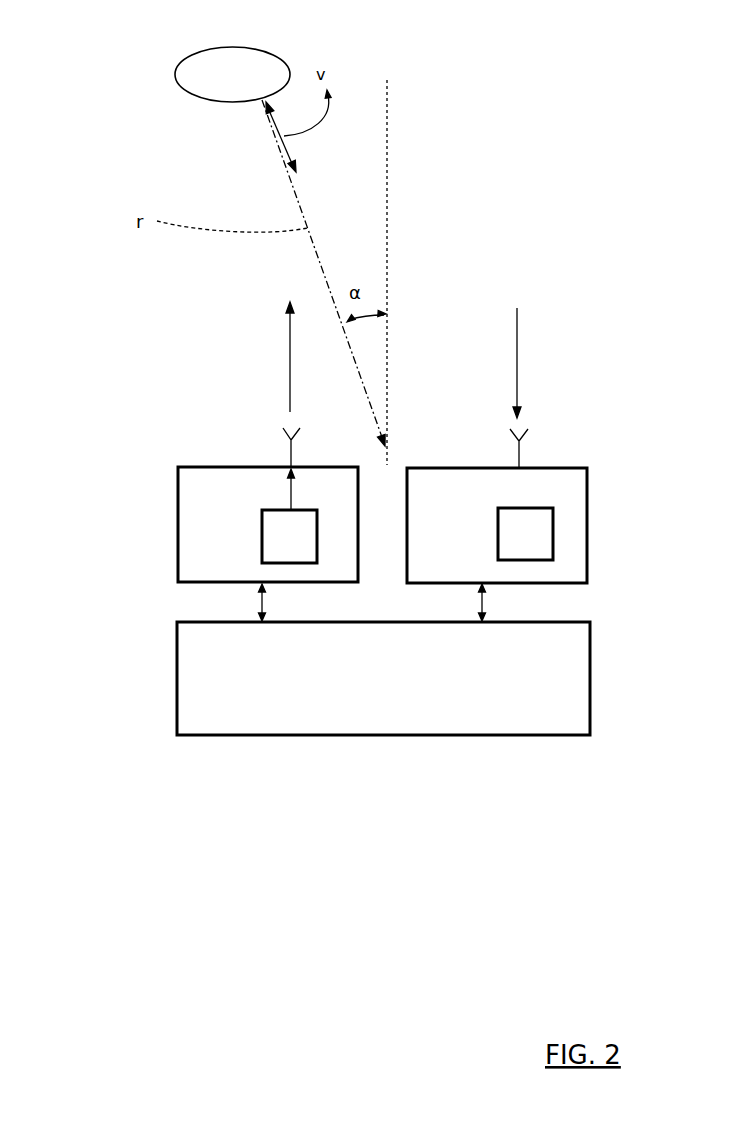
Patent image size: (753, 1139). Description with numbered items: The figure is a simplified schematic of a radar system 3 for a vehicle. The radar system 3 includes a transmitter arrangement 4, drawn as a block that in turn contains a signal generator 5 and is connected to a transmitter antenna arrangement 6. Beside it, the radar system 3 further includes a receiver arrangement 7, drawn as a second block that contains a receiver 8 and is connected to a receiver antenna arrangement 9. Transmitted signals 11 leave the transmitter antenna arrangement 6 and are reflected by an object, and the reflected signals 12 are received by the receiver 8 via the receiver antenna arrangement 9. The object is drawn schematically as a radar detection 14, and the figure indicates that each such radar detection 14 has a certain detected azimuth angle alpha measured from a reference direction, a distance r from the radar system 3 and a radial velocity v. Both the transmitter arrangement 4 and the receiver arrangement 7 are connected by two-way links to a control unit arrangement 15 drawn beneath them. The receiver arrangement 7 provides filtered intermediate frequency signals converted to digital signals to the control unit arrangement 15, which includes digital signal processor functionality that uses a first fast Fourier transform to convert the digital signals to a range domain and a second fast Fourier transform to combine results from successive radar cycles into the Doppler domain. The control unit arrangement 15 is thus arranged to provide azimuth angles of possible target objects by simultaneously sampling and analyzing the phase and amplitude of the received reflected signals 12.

The radar system 3 is at (455, 232).
The transmitter arrangement 4 is at (268, 524).
The signal generator 5 is at (289, 516).
The transmitter antenna arrangement 6 is at (289, 448).
The receiver arrangement 7 is at (497, 525).
The receiver 8 is at (525, 534).
The receiver antenna arrangement 9 is at (522, 450).
The transmitted signals 11 is at (290, 385).
The reflected signals 12 is at (518, 345).
The radar detection 14 is at (183, 68).
The control unit arrangement 15 is at (383, 659).